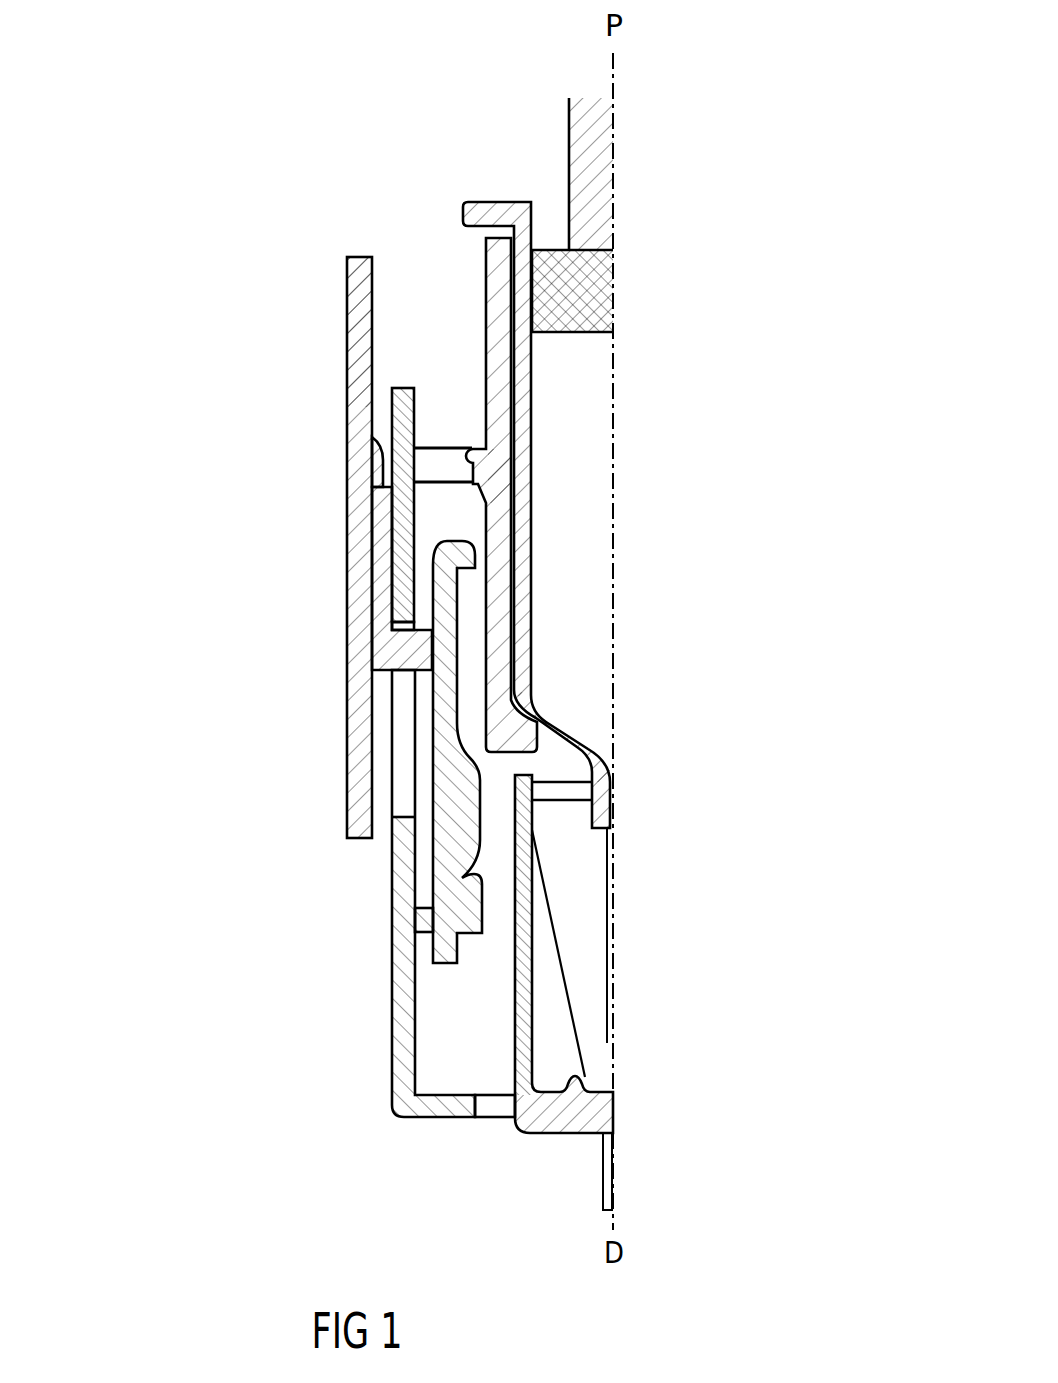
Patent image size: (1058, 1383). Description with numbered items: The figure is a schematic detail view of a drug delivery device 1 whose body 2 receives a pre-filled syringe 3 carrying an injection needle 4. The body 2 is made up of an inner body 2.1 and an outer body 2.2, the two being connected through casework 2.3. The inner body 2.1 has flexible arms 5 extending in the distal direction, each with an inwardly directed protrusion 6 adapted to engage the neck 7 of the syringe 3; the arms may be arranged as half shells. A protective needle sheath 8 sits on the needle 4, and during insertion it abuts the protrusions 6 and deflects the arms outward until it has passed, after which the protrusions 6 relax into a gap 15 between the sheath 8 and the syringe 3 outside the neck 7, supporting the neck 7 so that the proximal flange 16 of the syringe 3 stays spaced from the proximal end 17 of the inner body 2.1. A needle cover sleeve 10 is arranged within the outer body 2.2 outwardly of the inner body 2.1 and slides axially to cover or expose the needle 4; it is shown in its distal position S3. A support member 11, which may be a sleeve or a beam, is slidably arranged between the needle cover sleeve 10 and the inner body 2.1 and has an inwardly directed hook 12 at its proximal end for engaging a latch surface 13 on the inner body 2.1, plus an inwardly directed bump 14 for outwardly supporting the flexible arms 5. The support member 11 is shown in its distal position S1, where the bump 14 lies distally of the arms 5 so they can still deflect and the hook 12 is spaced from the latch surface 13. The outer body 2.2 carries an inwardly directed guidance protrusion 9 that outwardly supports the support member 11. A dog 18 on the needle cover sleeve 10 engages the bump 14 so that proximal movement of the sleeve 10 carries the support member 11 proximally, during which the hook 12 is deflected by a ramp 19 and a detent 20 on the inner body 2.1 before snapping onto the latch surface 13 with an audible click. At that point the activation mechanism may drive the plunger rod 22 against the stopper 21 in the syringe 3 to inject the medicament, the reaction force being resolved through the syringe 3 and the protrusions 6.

The drug delivery device 1 is at (360, 122).
The body 2 is at (347, 300).
The inner body 2.1 is at (497, 335).
The outer body 2.2 is at (352, 583).
The casework 2.3 is at (372, 438).
The pre-filled syringe 3 is at (524, 472).
The injection needle 4 is at (608, 953).
The flexible arms 5 is at (498, 610).
The protrusions 6 is at (523, 740).
The neck 7 is at (587, 745).
The protective needle sheath 8 is at (582, 1060).
The guidance protrusion 9 is at (400, 655).
The needle cover sleeve 10 is at (400, 995).
The support member 11 is at (440, 688).
The hook 12 is at (470, 553).
The latch surface 13 is at (478, 445).
The bump 14 is at (475, 812).
The gap 15 is at (573, 775).
The proximal flange 16 is at (500, 212).
The proximal end 17 is at (490, 240).
The dog 18 is at (470, 908).
The ramp 19 is at (470, 497).
The detent 20 is at (430, 455).
The stopper 21 is at (600, 290).
The plunger rod 22 is at (600, 185).
The distal position S1 is at (430, 740).
The distal position S3 is at (390, 1080).